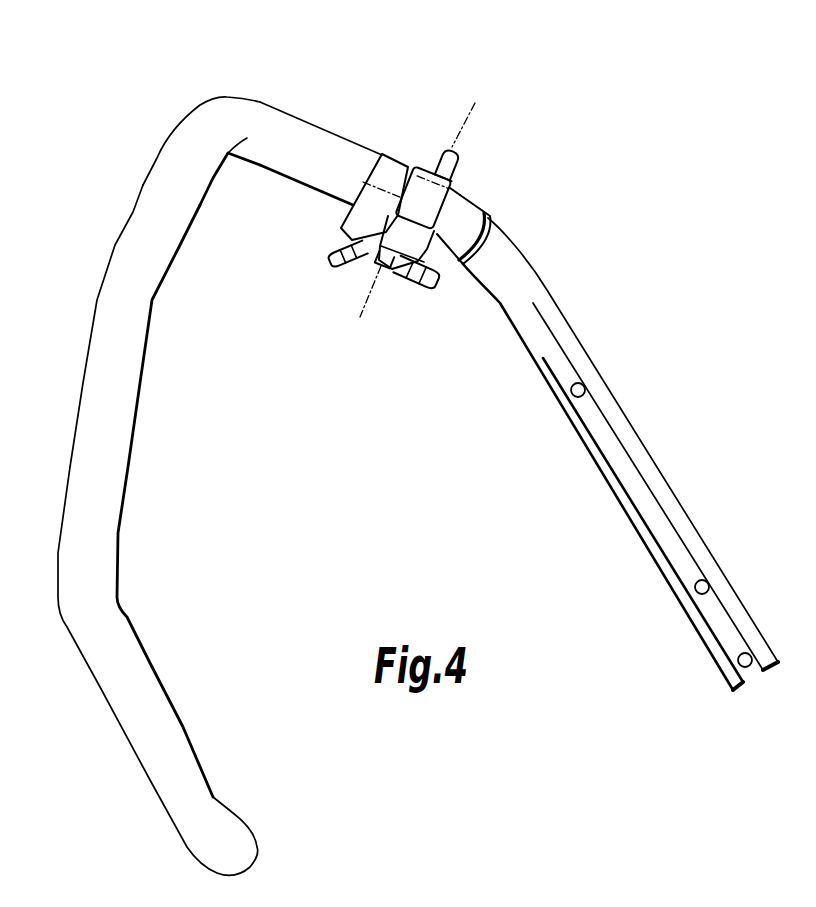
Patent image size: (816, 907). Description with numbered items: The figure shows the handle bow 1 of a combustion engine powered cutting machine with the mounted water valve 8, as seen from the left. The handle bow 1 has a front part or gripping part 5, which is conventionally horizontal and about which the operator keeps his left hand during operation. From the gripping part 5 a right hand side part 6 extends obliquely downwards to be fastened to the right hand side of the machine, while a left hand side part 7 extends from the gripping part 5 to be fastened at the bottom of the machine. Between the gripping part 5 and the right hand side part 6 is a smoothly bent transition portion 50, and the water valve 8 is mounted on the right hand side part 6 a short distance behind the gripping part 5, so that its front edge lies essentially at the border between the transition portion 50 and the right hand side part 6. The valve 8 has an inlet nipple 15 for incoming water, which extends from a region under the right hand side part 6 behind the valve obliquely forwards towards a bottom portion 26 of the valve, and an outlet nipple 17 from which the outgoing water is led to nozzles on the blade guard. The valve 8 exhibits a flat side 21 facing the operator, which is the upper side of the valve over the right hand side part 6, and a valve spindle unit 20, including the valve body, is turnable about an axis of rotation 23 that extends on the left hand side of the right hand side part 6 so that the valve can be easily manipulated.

The handle bow 1 is at (117, 142).
The front part / gripping part of the handle bow 5 is at (327, 143).
The right hand side part of the handle bow 6 is at (543, 297).
The left hand side part of the handle bow 7 is at (100, 391).
The water valve 8 is at (292, 222).
The inlet nipple 15 is at (428, 290).
The outlet nipple 17 is at (322, 262).
The valve spindle unit 20 is at (455, 178).
The side of the valve facing the operator 21 is at (398, 162).
The axis of rotation 23 is at (372, 293).
The bottom portion of the valve 26 is at (377, 268).
The bent transition portion 50 is at (225, 114).